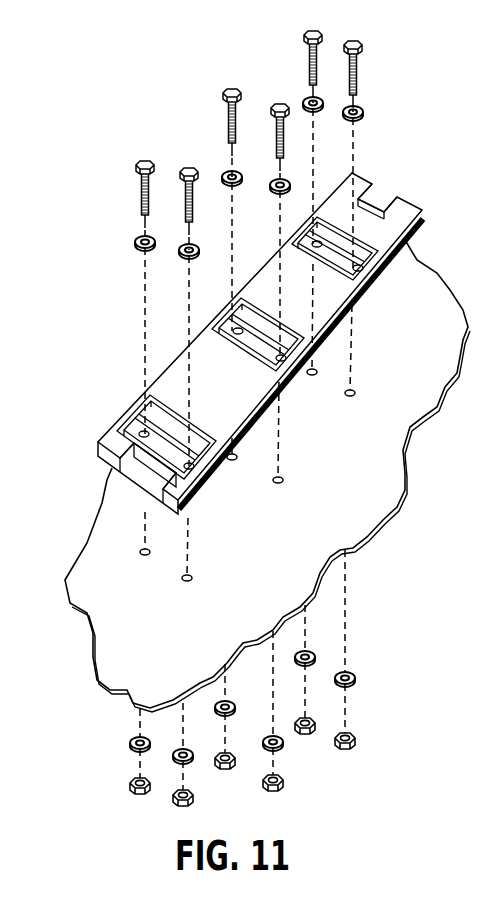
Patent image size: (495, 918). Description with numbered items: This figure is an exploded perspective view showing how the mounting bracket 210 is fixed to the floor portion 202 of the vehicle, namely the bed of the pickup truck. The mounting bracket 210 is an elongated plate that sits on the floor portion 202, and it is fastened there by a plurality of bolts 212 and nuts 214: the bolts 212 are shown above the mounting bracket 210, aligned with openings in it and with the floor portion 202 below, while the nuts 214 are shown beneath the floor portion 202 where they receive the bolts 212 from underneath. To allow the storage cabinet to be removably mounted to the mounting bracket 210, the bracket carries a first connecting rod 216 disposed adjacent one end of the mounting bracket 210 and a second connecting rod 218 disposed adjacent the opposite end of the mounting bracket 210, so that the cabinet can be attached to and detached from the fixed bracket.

The floor portion 202 is at (352, 535).
The mounting bracket 210 is at (400, 216).
The bolts 212 is at (140, 198).
The nuts 214 is at (131, 787).
The first connecting rod 216 is at (115, 474).
The second connecting rod 218 is at (371, 199).